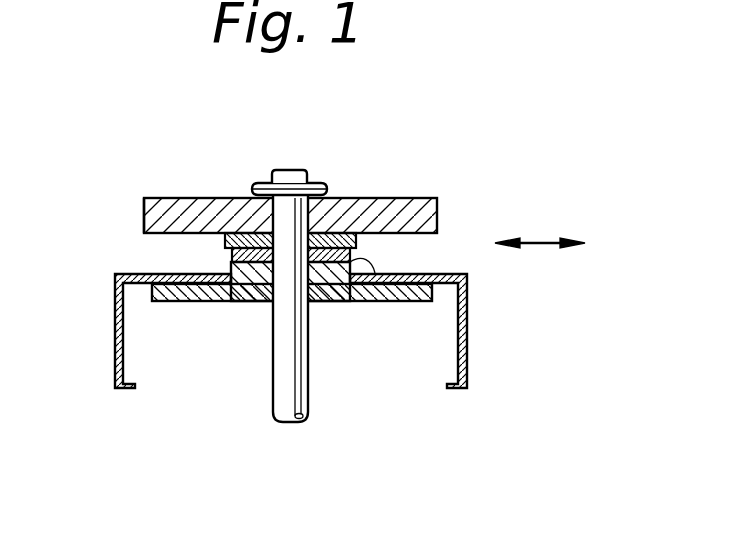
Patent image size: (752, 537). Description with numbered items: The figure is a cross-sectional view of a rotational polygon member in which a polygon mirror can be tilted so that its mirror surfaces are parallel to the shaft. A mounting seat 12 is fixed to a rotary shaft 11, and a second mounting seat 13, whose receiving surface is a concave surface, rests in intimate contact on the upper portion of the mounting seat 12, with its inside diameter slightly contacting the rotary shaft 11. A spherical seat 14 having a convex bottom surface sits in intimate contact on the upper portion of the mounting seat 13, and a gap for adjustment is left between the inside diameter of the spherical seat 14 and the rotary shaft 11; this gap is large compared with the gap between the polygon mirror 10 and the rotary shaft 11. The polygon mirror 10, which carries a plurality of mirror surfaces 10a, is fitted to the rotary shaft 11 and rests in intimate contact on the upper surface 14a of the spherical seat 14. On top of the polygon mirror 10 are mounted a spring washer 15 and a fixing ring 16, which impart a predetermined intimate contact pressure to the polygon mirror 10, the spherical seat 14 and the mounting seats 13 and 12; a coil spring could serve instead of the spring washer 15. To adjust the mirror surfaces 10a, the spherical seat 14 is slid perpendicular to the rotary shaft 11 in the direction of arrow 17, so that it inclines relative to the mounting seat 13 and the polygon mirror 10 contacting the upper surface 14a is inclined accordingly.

The polygon mirror 10 is at (425, 199).
The mirror surfaces 10a is at (144, 218).
The rotary shaft 11 is at (283, 392).
The mounting seat 12 is at (410, 290).
The mounting seat 13 is at (363, 301).
The spherical seat 14 is at (358, 243).
The upper surface 14a is at (364, 199).
The spring washer 15 is at (262, 186).
The fixing ring 16 is at (313, 186).
The arrow 17 is at (543, 243).